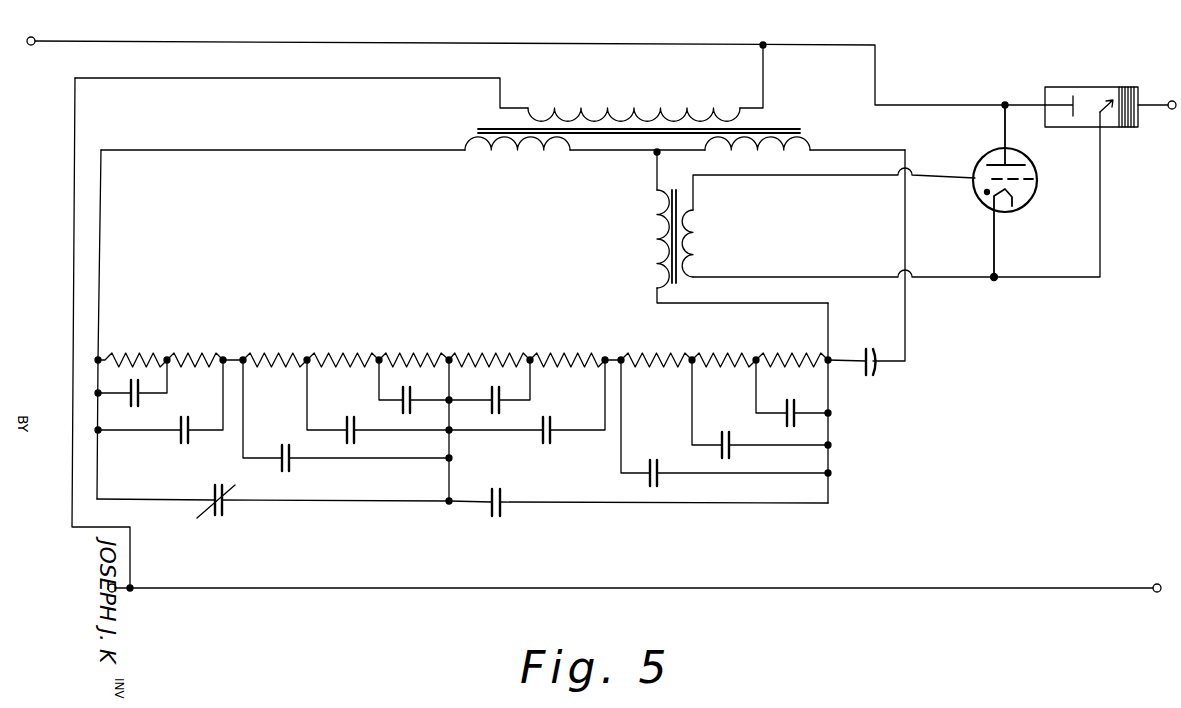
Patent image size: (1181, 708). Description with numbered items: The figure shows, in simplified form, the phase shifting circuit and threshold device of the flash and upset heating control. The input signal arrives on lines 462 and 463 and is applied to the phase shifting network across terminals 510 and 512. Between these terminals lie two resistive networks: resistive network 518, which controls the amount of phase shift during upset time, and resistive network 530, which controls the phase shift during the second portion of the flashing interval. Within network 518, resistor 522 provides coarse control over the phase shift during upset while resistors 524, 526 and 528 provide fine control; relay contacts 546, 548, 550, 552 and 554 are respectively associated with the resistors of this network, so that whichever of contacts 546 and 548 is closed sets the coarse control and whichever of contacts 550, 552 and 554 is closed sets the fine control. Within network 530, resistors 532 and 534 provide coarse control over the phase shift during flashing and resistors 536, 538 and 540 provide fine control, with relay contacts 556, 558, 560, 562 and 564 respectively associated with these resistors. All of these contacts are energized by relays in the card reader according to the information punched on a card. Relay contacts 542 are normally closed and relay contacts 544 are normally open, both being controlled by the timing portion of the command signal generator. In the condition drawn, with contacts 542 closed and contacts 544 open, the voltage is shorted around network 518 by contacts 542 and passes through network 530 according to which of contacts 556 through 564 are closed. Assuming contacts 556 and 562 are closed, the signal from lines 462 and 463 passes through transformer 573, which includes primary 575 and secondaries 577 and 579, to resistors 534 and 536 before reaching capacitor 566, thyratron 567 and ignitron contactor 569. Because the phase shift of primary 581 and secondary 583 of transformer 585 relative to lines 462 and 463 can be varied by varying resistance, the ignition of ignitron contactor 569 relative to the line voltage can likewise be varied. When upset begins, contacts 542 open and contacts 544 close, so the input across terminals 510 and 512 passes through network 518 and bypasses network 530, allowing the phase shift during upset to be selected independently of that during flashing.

The line 463 is at (661, 45).
The line 462 is at (500, 108).
The transformer 573 is at (503, 123).
The primary 575 is at (663, 118).
The secondary 577 is at (516, 152).
The secondary 579 is at (759, 153).
The transformer 585 is at (834, 207).
The primary 581 is at (650, 250).
The secondary 583 is at (700, 238).
The thyratron 567 is at (990, 154).
The ignitron contactor 569 is at (1098, 84).
The terminal 510 is at (100, 358).
The terminal 512 is at (832, 357).
The resistive network 518 is at (309, 327).
The resistive network 530 is at (640, 337).
The resistor 522 is at (212, 340).
The resistor 524 is at (286, 355).
The resistor 526 is at (352, 355).
The resistor 528 is at (427, 342).
The resistor 532 is at (490, 355).
The resistor 534 is at (575, 342).
The resistor 536 is at (668, 350).
The resistor 538 is at (733, 345).
The resistor 540 is at (795, 356).
The relay contacts 542 is at (212, 516).
The relay contacts 544 is at (498, 516).
The relay contacts 546 is at (123, 402).
The relay contacts 548 is at (176, 446).
The relay contacts 550 is at (290, 470).
The relay contacts 552 is at (354, 440).
The relay contacts 554 is at (402, 410).
The relay contacts 556 is at (498, 378).
The relay contacts 558 is at (546, 444).
The relay contacts 560 is at (672, 470).
The relay contacts 562 is at (730, 450).
The relay contacts 564 is at (795, 424).
The capacitor 566 is at (867, 375).